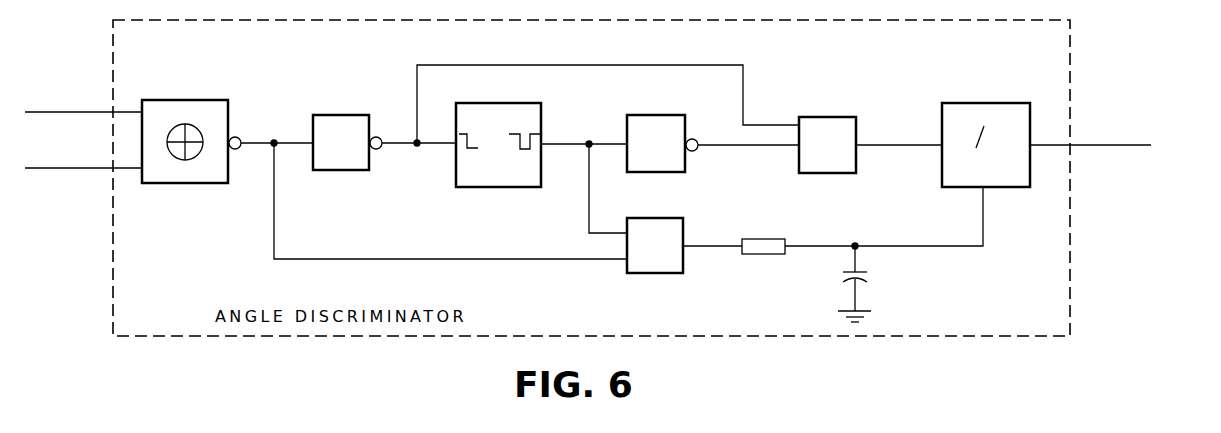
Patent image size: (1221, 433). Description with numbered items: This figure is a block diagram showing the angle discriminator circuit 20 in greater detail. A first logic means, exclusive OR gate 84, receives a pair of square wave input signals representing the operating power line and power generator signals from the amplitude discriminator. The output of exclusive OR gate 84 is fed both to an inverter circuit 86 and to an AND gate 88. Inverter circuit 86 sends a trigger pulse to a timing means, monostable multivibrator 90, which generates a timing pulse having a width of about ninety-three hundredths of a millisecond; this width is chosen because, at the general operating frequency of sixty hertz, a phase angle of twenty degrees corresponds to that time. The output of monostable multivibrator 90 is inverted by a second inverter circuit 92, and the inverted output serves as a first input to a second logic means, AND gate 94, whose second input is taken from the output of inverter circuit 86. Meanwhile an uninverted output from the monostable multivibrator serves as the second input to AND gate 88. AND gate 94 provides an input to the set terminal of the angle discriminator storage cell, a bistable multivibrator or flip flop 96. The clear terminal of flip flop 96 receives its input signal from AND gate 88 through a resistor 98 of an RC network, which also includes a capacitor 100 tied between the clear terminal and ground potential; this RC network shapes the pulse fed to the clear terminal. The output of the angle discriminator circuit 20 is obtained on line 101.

The angle discriminator circuit 20 is at (1070, 50).
The exclusive OR gate 84 is at (230, 98).
The inverter circuit 86 is at (352, 114).
The AND gate 88 is at (683, 222).
The monostable multivibrator 90 is at (541, 112).
The second inverter circuit 92 is at (685, 114).
The AND gate 94 is at (845, 116).
The flip flop 96 is at (1019, 84).
The resistor 98 is at (770, 239).
The capacitor 100 is at (870, 279).
The line 101 is at (1126, 145).